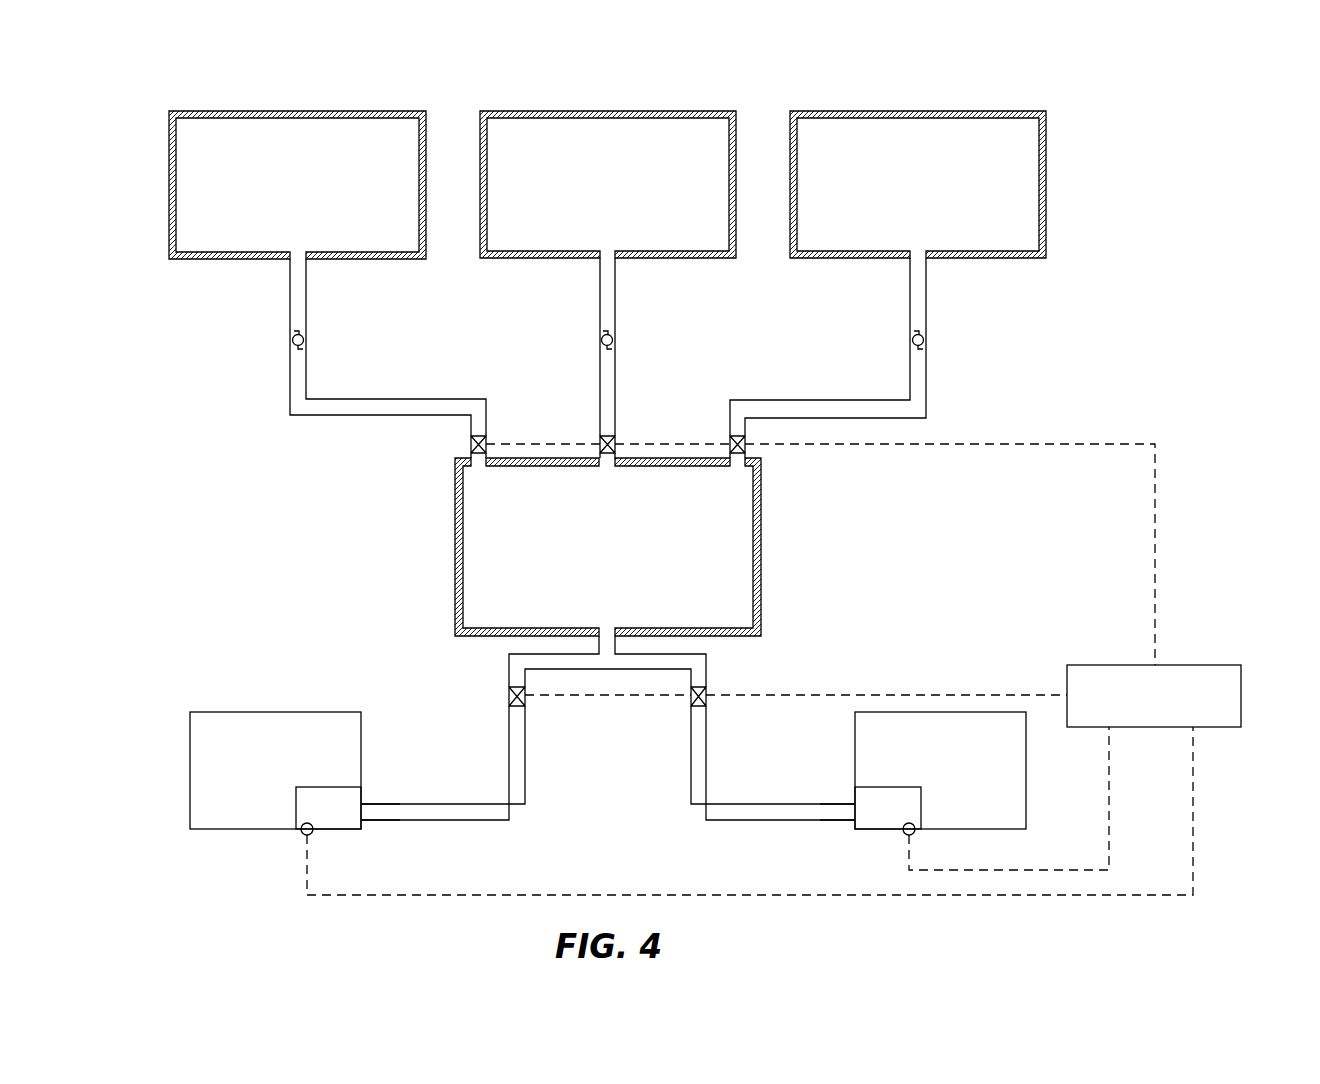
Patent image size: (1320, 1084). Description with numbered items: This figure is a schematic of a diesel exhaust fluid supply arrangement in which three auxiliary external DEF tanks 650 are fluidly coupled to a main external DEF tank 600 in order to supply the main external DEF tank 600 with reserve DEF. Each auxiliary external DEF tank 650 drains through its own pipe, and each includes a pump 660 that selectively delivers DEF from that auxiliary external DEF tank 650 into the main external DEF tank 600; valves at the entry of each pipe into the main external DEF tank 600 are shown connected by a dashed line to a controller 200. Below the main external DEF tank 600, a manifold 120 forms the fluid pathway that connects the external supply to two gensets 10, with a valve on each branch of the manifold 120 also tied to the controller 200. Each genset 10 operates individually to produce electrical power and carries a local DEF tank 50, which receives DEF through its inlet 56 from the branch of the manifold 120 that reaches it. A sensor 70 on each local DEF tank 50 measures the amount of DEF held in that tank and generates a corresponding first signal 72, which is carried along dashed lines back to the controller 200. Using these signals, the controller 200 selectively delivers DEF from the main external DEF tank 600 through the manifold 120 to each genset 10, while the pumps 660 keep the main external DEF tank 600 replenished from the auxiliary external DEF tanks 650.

The auxiliary external DEF tank 650 is at (303, 111).
The pump 660 is at (291, 342).
The main external DEF tank 600 is at (475, 552).
The manifold 120 is at (493, 672).
The genset 10 is at (188, 750).
The local DEF tank 50 is at (320, 797).
The inlet 56 is at (363, 816).
The sensor 70 is at (302, 835).
The first signal 72 is at (569, 893).
The controller 200 is at (1211, 665).